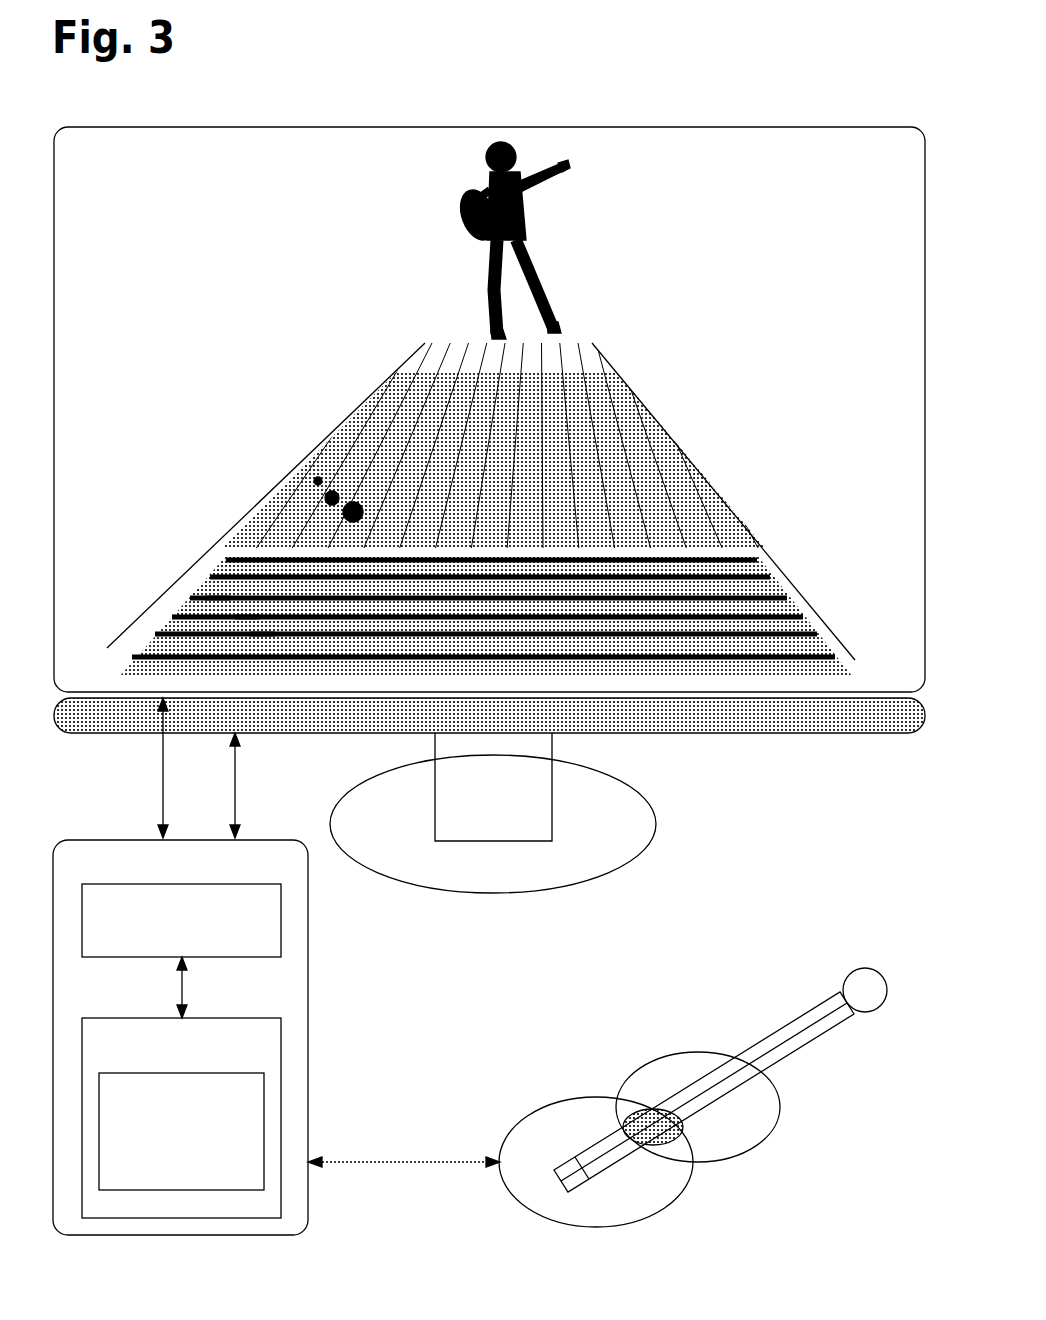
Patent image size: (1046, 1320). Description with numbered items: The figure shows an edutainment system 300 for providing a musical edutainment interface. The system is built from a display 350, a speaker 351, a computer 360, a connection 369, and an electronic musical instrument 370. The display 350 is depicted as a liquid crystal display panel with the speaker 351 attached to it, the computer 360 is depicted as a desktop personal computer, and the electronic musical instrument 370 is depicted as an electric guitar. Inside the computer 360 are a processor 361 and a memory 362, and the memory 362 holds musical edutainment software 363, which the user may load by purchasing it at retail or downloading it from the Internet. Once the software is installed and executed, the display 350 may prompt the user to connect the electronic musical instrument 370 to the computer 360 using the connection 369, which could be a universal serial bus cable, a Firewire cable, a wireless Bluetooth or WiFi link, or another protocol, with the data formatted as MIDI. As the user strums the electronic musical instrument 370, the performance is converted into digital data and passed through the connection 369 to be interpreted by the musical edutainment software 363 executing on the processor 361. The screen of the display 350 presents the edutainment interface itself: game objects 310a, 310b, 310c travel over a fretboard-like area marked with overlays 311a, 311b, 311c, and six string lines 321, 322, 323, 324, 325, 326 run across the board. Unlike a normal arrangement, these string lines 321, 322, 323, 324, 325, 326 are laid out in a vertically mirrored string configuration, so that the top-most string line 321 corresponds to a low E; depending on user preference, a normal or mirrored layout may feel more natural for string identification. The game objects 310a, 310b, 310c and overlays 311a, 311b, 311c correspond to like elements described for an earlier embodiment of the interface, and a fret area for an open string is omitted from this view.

The edutainment system 300 is at (845, 78).
The display 350 is at (207, 173).
The speaker 351 is at (489, 757).
The computer 360 is at (257, 871).
The processor 361 is at (257, 931).
The memory 362 is at (247, 1053).
The musical edutainment software 363 is at (250, 1170).
The connection 369 is at (406, 1120).
The electronic musical instrument 370 is at (641, 1091).
The game object 310a is at (315, 478).
The game object 310b is at (328, 494).
The game object 310c is at (348, 506).
The overlay 311a is at (257, 630).
The overlay 311b is at (240, 612).
The overlay 311c is at (213, 593).
The string line 321 is at (742, 557).
The string line 322 is at (755, 572).
The string line 323 is at (772, 590).
The string line 324 is at (788, 609).
The string line 325 is at (805, 627).
The string line 326 is at (828, 644).